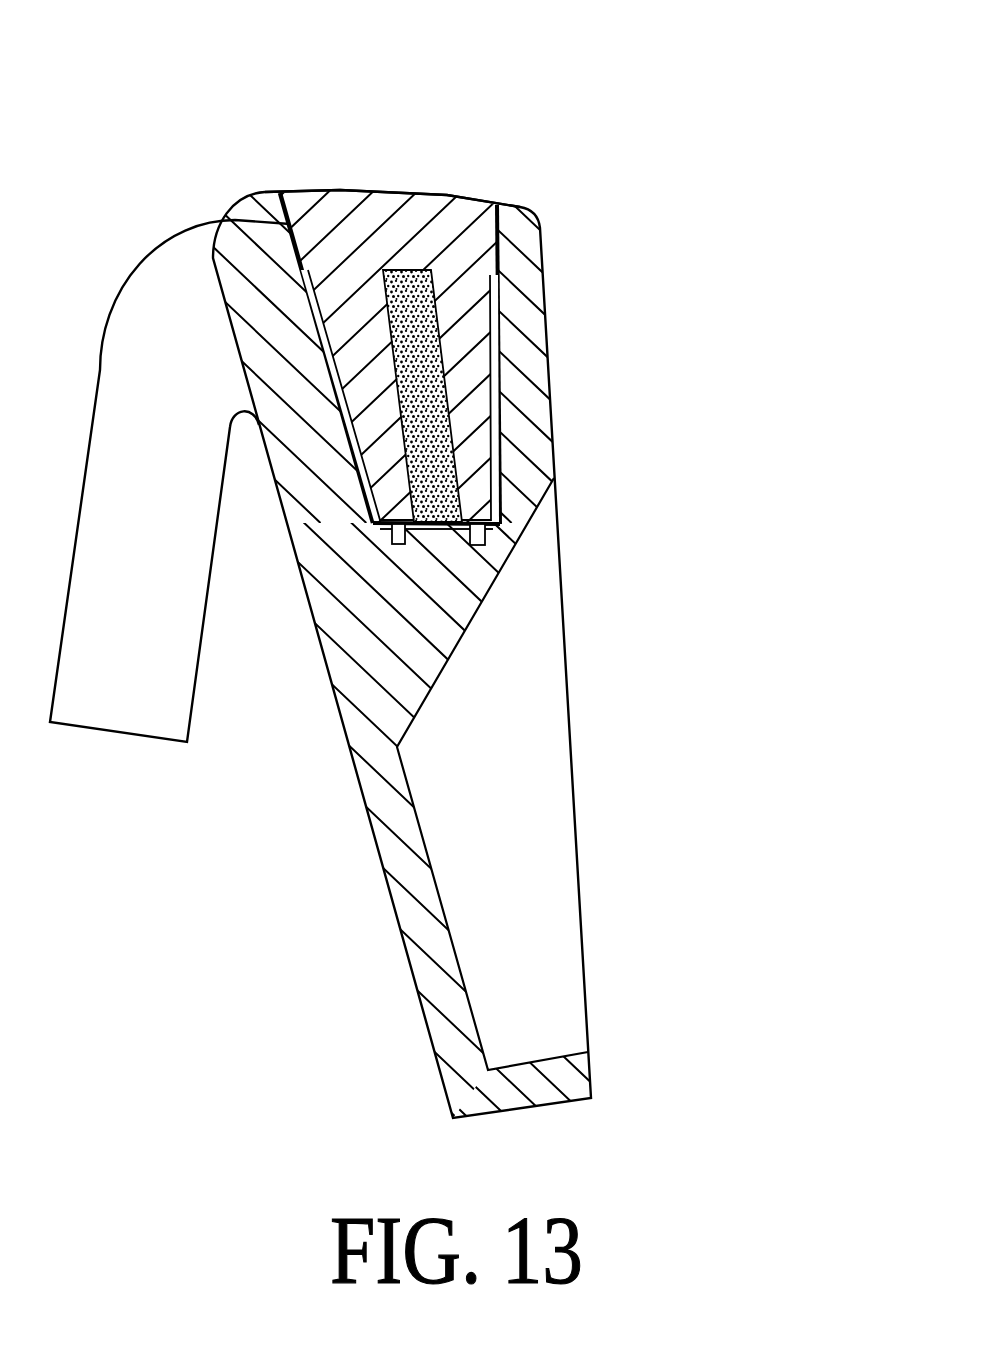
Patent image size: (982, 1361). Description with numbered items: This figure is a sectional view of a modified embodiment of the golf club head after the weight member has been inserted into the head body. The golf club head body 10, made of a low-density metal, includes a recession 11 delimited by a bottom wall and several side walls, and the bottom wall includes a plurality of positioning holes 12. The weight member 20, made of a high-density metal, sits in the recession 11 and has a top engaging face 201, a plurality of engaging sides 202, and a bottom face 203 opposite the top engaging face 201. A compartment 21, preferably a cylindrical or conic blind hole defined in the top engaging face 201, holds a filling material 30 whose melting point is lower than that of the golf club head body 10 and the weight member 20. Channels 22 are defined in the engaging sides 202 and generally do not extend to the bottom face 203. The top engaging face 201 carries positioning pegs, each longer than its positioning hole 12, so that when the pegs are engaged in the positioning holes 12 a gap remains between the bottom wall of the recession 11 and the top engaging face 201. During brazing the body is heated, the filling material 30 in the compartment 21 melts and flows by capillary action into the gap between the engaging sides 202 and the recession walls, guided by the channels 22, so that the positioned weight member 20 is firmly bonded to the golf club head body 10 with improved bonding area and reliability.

The golf club head body 10 is at (532, 467).
The recession 11 is at (503, 355).
The positioning hole 12 is at (487, 533).
The weight member 20 is at (404, 157).
The top engaging face 201 is at (493, 540).
The engaging side 202 is at (227, 221).
The bottom face 203 is at (340, 190).
The compartment 21 is at (447, 397).
The channel 22 is at (497, 305).
The filling material 30 is at (503, 502).